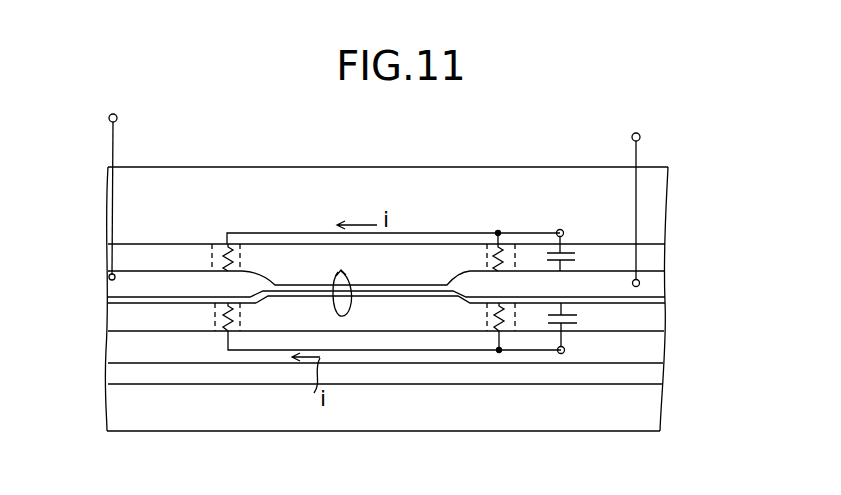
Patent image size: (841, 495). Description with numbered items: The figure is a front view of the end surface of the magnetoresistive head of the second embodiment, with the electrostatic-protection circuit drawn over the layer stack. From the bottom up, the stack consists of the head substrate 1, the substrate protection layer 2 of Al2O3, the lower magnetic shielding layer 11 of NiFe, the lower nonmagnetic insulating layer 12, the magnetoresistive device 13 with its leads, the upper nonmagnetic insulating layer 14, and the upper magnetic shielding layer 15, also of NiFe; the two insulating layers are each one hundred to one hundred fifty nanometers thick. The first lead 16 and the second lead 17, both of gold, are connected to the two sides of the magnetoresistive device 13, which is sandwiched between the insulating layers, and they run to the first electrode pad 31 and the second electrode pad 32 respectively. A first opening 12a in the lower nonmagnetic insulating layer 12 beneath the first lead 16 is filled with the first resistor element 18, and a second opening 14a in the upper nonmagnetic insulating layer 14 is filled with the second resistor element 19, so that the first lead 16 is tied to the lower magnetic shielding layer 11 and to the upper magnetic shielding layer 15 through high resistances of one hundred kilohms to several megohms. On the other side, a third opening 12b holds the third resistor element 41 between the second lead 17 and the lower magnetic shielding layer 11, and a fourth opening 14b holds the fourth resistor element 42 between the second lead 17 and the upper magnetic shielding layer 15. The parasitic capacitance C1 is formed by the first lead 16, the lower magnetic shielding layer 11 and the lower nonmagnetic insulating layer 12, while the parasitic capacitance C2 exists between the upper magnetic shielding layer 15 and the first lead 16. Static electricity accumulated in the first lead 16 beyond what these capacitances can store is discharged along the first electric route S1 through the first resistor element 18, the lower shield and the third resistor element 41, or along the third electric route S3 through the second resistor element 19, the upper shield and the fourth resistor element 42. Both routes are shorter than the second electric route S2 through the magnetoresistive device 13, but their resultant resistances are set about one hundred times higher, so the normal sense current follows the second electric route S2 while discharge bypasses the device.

The head substrate 1 is at (642, 410).
The substrate protection layer 2 is at (650, 380).
The lower magnetic shielding layer 11 is at (654, 352).
The lower nonmagnetic insulating layer 12 is at (654, 320).
The first opening 12a is at (522, 333).
The third opening 12b is at (213, 312).
The magnetoresistive device 13 is at (343, 316).
The upper nonmagnetic insulating layer 14 is at (652, 258).
The second opening 14a is at (480, 263).
The fourth opening 14b is at (212, 263).
The upper magnetic shielding layer 15 is at (648, 206).
The first lead 16 is at (655, 287).
The second lead 17 is at (122, 288).
The first resistor element 18 is at (488, 322).
The second resistor element 19 is at (498, 232).
The first electrode pad 31 is at (634, 192).
The second electrode pad 32 is at (114, 179).
The third resistor element 41 is at (226, 332).
The fourth resistor element 42 is at (215, 262).
The first electric route S1 is at (272, 350).
The second electric route S2 is at (367, 292).
The third electric route S3 is at (275, 232).
The parasitic capacitance C1 is at (580, 320).
The parasitic capacitance C2 is at (575, 258).